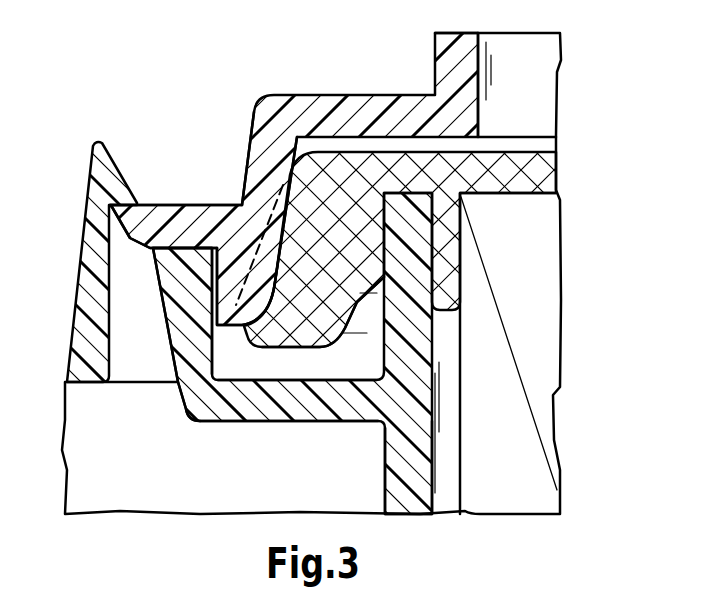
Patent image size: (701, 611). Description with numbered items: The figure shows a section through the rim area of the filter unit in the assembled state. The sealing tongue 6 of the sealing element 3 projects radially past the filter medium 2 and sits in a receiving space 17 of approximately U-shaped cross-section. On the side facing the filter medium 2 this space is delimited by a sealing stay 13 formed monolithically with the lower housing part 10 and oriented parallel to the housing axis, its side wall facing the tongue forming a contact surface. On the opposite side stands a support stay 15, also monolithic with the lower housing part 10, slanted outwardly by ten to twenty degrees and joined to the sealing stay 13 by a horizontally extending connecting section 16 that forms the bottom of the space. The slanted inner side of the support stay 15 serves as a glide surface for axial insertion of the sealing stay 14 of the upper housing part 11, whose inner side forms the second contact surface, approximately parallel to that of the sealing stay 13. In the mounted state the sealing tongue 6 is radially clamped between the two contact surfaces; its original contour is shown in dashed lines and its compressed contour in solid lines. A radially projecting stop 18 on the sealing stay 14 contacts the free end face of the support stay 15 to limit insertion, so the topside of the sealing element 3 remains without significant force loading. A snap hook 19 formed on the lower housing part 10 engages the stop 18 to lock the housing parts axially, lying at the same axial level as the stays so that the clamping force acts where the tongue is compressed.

The filter medium 2 is at (524, 257).
The sealing element 3 is at (305, 353).
The sealing tongue 6 is at (332, 330).
The lower housing part 10 is at (413, 488).
The upper housing part 11 is at (450, 62).
The sealing stay 13 is at (413, 348).
The sealing stay 14 is at (226, 258).
The support stay 15 is at (193, 340).
The connecting section 16 is at (358, 406).
The receiving space 17 is at (252, 376).
The stop 18 is at (153, 225).
The snap hook 19 is at (100, 214).